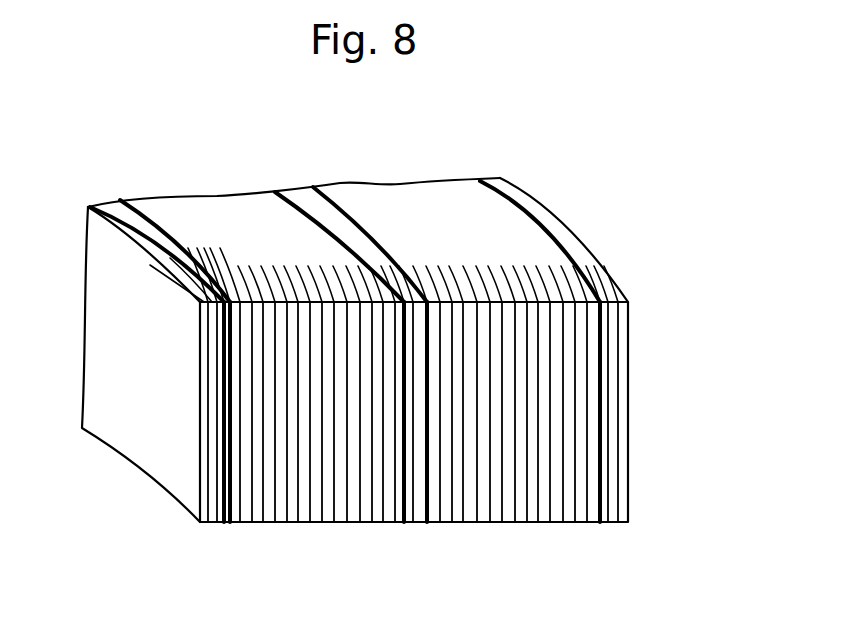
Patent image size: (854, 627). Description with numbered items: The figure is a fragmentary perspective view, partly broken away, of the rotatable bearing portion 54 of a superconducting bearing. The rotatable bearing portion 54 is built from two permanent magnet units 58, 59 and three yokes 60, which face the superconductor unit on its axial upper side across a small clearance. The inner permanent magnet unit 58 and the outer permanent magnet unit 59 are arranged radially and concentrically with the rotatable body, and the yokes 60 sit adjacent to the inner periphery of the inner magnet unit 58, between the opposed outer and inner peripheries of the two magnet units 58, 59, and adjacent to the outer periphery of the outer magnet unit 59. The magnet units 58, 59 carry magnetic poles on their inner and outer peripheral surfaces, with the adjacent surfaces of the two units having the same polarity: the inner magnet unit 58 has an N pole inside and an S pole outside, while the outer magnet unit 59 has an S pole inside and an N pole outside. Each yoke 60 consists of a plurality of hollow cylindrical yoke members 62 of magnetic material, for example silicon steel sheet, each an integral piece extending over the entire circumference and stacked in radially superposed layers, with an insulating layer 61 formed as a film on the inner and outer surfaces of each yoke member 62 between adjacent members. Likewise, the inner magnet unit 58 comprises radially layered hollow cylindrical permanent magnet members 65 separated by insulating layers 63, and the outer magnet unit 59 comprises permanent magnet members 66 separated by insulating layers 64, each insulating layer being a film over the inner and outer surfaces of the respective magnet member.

The rotatable bearing portion 54 is at (547, 193).
The inner permanent magnet unit 58 is at (162, 200).
The outer permanent magnet unit 59 is at (410, 153).
The yoke 60 is at (115, 210).
The insulating layer 61 is at (207, 330).
The yoke member 62 is at (221, 523).
The insulating layer 63 is at (287, 318).
The insulating layer 64 is at (482, 320).
The permanent magnet member 65 is at (237, 523).
The permanent magnet member 66 is at (435, 523).